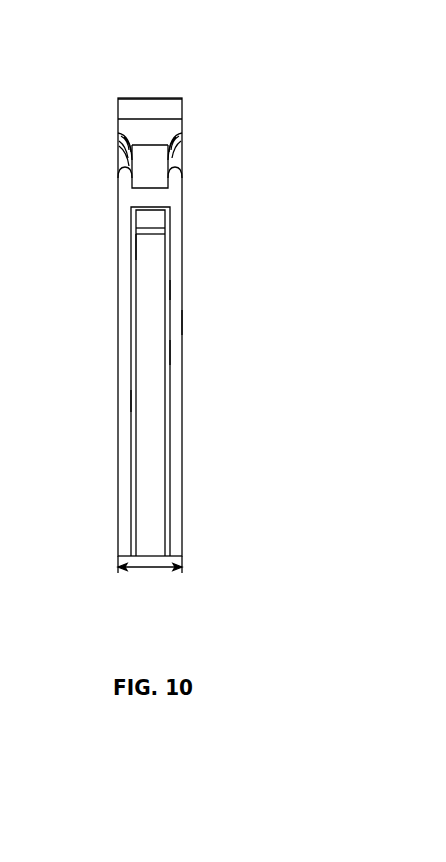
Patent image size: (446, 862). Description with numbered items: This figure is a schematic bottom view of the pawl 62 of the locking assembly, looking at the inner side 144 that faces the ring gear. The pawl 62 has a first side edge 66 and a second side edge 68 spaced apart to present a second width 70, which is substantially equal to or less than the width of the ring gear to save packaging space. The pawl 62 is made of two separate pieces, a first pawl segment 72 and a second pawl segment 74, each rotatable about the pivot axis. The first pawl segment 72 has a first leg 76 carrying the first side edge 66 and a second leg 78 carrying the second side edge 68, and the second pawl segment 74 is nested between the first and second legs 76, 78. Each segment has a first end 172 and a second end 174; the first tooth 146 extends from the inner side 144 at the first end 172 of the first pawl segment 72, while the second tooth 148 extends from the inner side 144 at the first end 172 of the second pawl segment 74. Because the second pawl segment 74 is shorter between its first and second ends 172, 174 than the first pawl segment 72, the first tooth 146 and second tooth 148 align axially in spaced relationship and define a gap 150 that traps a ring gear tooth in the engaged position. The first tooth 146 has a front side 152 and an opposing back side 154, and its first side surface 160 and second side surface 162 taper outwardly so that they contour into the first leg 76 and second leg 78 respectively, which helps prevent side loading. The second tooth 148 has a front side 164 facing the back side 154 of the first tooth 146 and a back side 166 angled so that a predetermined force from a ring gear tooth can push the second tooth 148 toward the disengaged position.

The pawl 62 is at (229, 158).
The first side edge 66 is at (183, 322).
The second side edge 68 is at (118, 492).
The second width 70 is at (150, 568).
The first pawl segment 72 is at (182, 108).
The second pawl segment 74 is at (160, 442).
The first leg 76 is at (177, 290).
The second leg 78 is at (130, 400).
The inner side 144 is at (172, 352).
The first tooth 146 is at (129, 168).
The second tooth 148 is at (158, 217).
The gap 150 is at (170, 197).
The front side 152 is at (153, 128).
The back side 154 is at (135, 190).
The first side surface 160 is at (181, 152).
The second side surface 162 is at (124, 140).
The front side 164 is at (128, 198).
The back side 166 is at (138, 240).
The first end 172 is at (188, 53).
The second end 174 is at (187, 548).